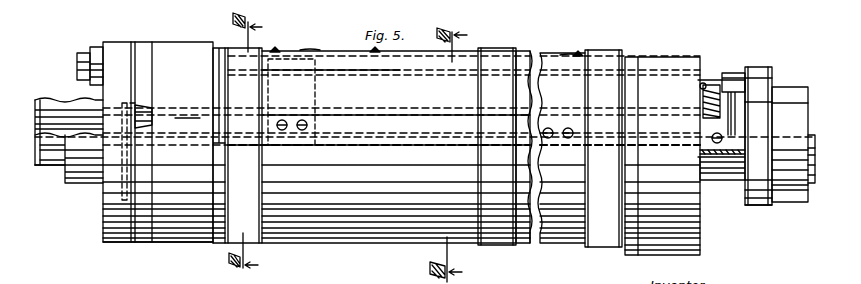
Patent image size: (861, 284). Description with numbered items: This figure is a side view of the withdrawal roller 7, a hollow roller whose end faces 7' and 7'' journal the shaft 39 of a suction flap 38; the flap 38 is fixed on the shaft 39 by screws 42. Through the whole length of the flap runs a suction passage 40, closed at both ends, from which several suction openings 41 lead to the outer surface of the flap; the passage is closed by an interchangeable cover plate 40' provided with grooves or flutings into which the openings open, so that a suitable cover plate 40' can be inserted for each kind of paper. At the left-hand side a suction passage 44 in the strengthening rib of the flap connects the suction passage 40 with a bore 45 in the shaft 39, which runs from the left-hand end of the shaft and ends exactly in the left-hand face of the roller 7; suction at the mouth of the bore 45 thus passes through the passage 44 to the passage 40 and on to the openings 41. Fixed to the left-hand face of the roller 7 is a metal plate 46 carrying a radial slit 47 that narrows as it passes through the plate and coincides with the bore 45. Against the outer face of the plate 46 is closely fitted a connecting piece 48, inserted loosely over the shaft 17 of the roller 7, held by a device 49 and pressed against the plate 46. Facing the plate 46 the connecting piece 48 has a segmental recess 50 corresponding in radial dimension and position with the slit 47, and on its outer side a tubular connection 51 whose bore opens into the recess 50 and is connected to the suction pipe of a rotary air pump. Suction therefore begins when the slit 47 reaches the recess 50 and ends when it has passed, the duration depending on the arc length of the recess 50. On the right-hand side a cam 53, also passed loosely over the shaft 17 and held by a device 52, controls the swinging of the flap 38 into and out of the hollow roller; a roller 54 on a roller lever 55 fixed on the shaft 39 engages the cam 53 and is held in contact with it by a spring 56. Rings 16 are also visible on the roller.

The roller 7 is at (397, 163).
The face of the roller 7' is at (158, 256).
The face of the roller 7'' is at (671, 166).
The ring 16 is at (258, 245).
The shaft of the roller 17 is at (55, 165).
The flap 38 is at (330, 72).
The shaft 39 is at (422, 114).
The suction passage 40 is at (574, 43).
The cover plate 40' is at (317, 33).
The suction openings 41 is at (290, 48).
The screws 42 is at (304, 120).
The suction passage 44 is at (272, 93).
The bore 45 is at (189, 112).
The metal plate 46 is at (147, 42).
The radial slit 47 is at (150, 106).
The connecting piece 48 is at (121, 42).
The device 49 is at (94, 47).
The recess 50 is at (126, 105).
The tubular connection 51 is at (50, 100).
The device 52 is at (790, 87).
The cam 53 is at (762, 205).
The roller 54 is at (760, 67).
The roller lever 55 is at (735, 73).
The spring 56 is at (700, 110).